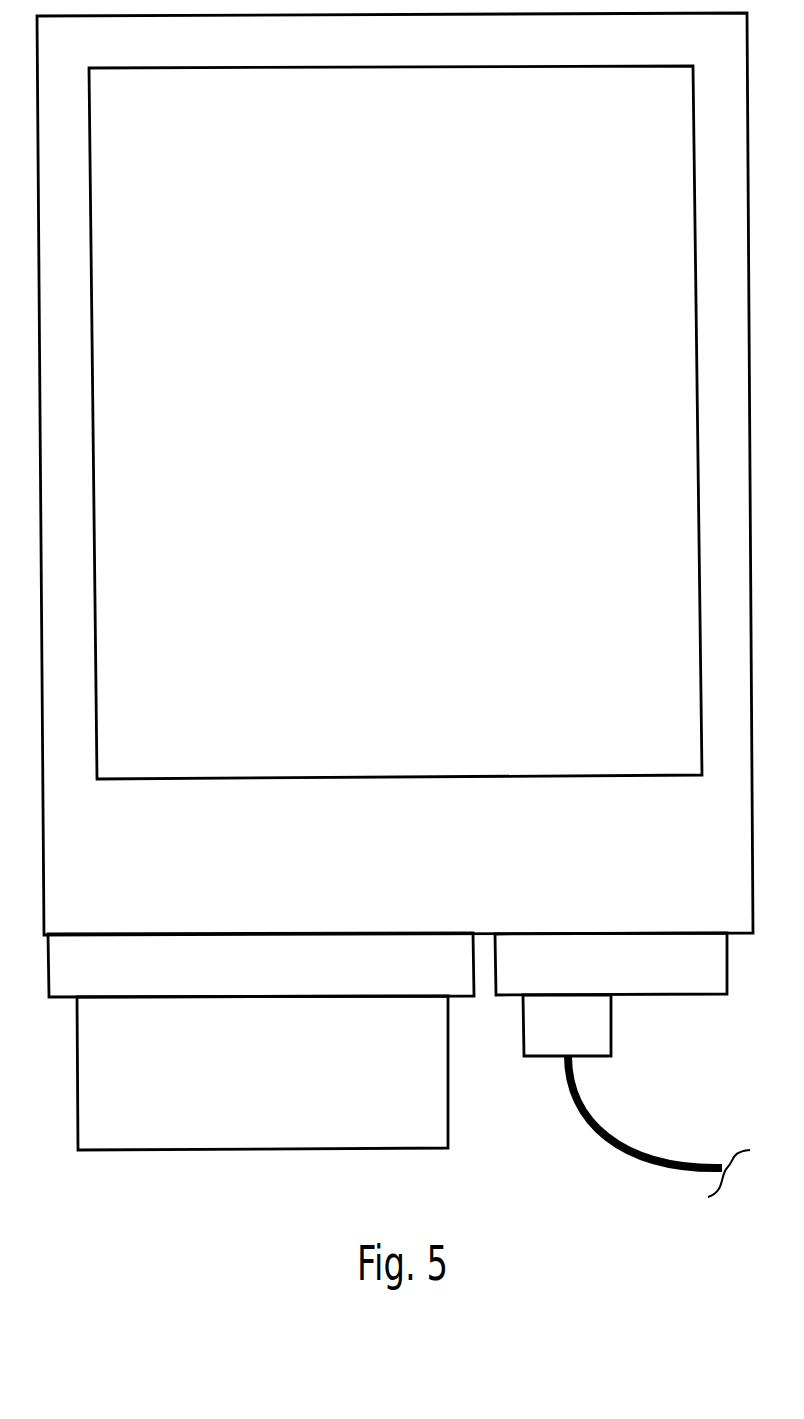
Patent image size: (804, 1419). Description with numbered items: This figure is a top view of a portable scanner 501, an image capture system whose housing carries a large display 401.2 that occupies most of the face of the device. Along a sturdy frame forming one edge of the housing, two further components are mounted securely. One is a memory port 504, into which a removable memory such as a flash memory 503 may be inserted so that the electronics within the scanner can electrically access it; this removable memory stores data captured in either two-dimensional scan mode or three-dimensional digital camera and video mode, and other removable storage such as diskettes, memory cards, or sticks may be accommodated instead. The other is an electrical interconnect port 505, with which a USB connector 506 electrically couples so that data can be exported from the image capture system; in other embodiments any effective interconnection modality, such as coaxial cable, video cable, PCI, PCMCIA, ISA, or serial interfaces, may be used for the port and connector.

The display 401.2 is at (416, 234).
The portable scanner 501 is at (417, 891).
The flash memory 503 is at (280, 1110).
The memory port 504 is at (366, 967).
The electrical interconnect port 505 is at (693, 990).
The USB connector 506 is at (587, 1052).